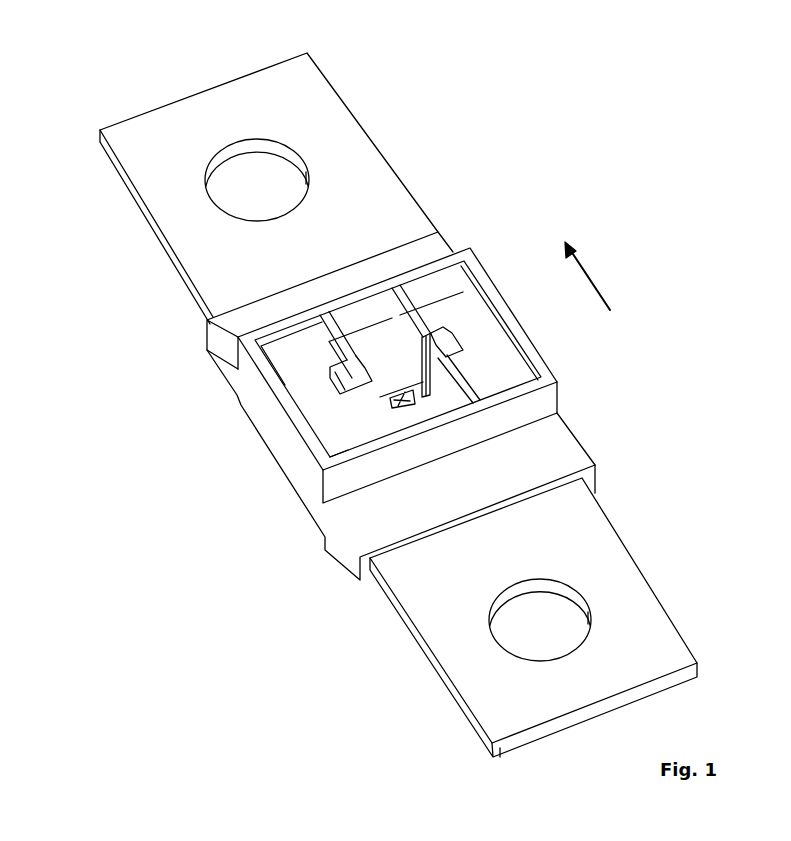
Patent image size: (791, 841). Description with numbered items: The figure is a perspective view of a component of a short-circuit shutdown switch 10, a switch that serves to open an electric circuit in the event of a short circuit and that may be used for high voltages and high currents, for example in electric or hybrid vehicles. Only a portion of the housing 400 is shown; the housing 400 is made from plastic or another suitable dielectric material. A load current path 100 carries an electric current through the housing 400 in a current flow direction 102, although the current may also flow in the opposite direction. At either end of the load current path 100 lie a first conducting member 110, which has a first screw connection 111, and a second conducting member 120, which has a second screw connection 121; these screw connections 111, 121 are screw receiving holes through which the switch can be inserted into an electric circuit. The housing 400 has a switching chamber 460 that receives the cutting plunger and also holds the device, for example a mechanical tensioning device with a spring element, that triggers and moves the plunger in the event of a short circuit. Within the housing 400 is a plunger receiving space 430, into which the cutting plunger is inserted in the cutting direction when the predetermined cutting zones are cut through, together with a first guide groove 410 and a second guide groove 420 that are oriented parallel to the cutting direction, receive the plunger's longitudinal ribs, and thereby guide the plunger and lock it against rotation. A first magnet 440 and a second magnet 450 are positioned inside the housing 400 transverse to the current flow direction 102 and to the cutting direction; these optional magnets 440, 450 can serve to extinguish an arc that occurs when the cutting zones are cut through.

The short-circuit shutdown switch 10 is at (103, 55).
The load current path 100 is at (375, 177).
The current flow direction 102 is at (593, 273).
The first conducting member 110 is at (311, 78).
The first screw connection 111 is at (250, 167).
The second conducting member 120 is at (645, 600).
The second screw connection 121 is at (558, 615).
The housing 400 is at (273, 453).
The first guide groove 410 is at (333, 373).
The second guide groove 420 is at (412, 373).
The plunger receiving space 430 is at (407, 387).
The first magnet 440 is at (340, 443).
The second magnet 450 is at (520, 368).
The switching chamber 460 is at (368, 342).